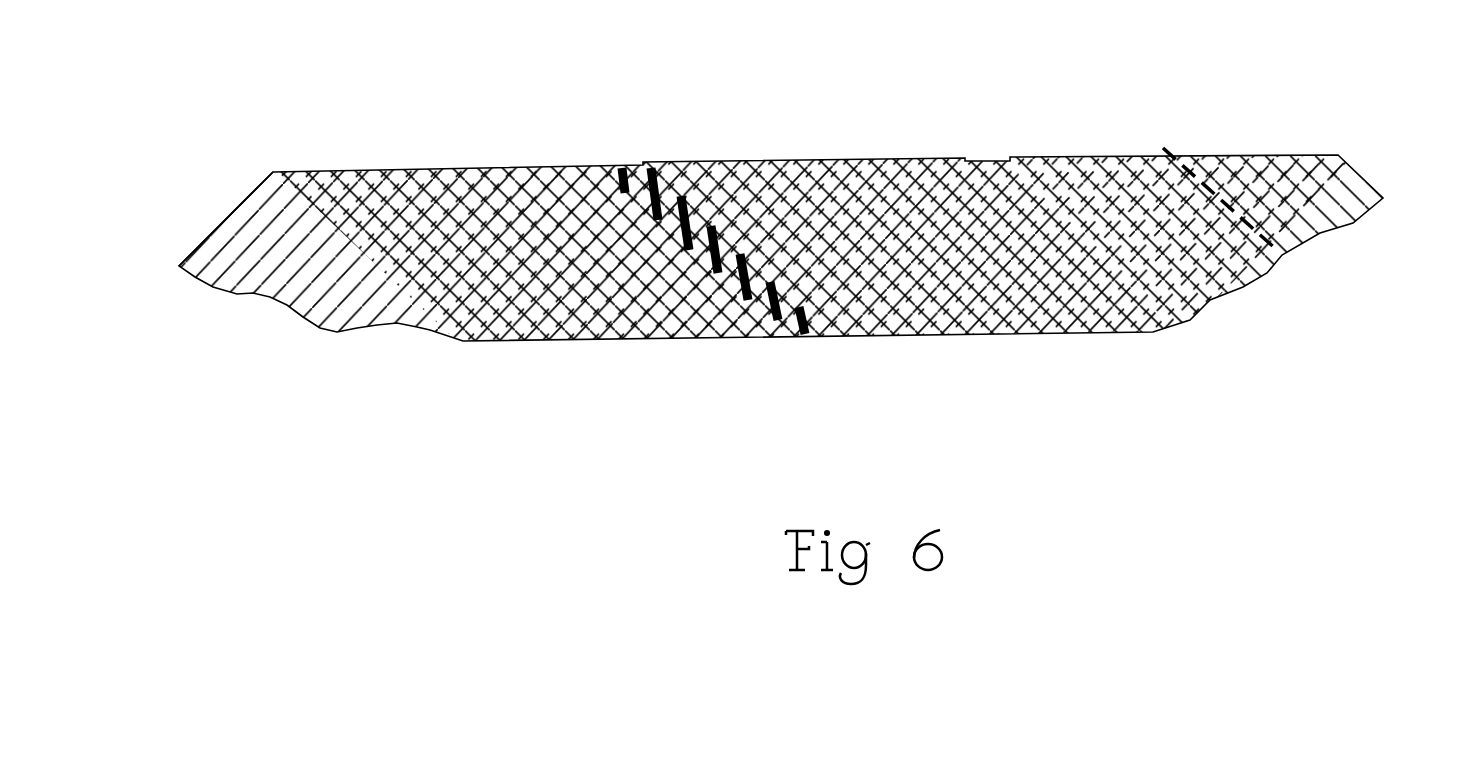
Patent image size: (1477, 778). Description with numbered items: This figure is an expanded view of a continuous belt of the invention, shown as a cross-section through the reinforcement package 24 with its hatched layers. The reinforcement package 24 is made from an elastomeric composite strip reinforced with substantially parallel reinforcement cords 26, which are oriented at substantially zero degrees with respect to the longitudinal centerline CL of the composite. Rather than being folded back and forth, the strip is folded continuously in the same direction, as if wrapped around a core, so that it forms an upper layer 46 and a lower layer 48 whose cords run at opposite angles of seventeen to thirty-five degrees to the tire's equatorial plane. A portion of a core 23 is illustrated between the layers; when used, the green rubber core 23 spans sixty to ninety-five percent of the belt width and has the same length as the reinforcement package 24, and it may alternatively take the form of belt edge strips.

The reinforcement package 24 is at (513, 527).
The upper layer 46 is at (567, 176).
The lower layer 48 is at (623, 167).
The core 23 is at (793, 334).
The reinforcement cords 26 is at (252, 295).
The longitudinal centerline CL is at (1282, 255).